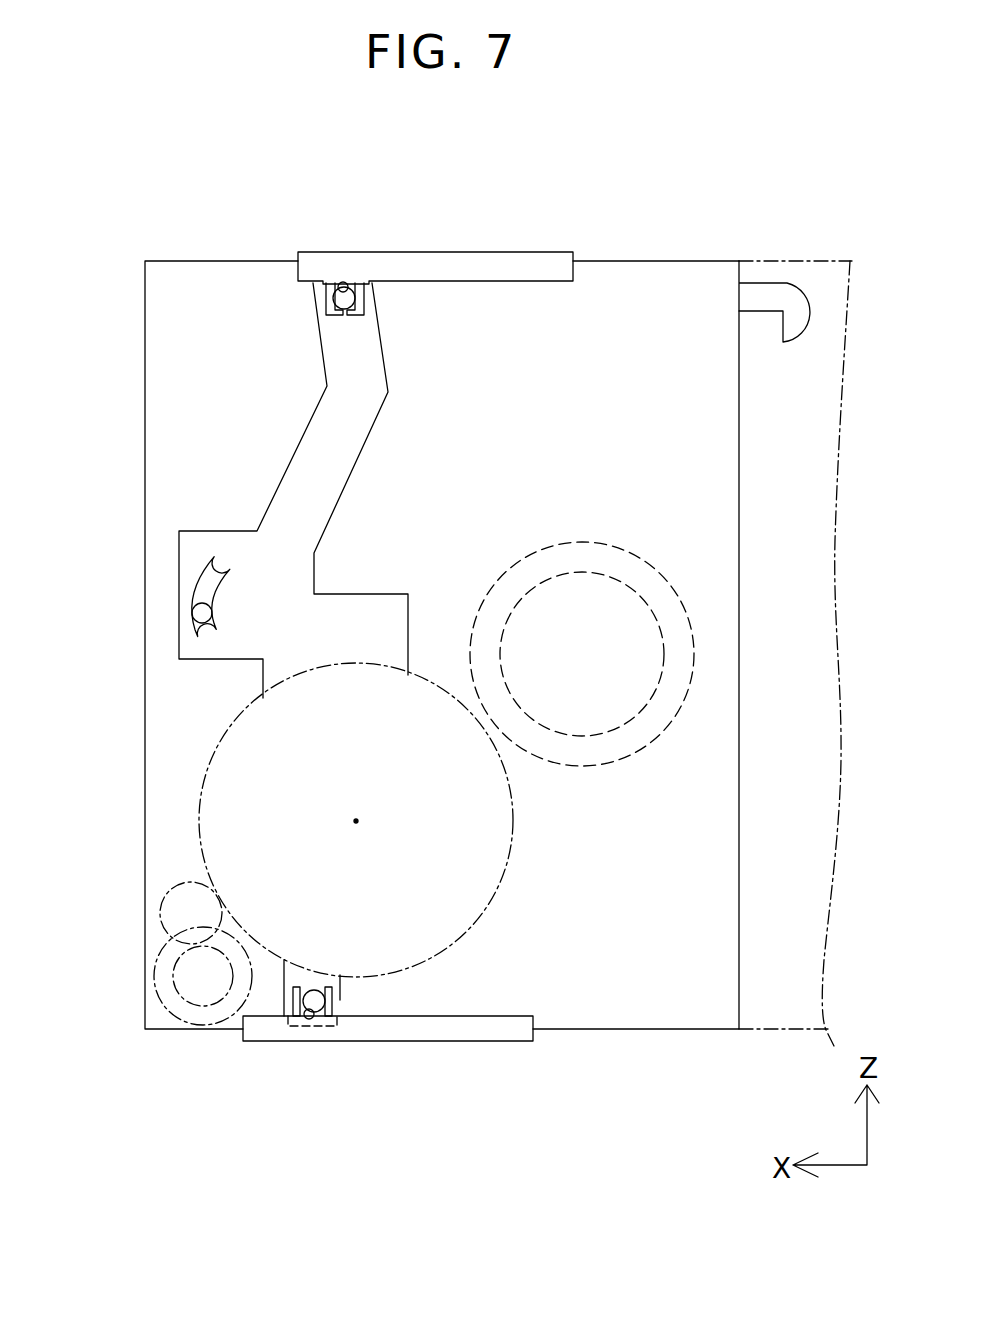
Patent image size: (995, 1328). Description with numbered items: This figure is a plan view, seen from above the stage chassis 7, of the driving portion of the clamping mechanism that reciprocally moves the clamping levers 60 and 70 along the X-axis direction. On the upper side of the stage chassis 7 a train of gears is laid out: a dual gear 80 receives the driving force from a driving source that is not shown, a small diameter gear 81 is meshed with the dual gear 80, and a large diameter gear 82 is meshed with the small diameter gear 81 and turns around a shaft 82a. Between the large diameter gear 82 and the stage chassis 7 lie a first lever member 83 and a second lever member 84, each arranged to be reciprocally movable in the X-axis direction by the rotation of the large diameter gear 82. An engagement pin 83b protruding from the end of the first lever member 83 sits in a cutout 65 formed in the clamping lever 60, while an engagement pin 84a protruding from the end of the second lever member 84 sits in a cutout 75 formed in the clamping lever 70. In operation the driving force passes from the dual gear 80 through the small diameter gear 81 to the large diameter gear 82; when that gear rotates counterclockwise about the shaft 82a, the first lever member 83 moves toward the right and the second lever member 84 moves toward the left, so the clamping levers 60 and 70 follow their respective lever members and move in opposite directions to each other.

The stage chassis 7 is at (705, 276).
The clamping lever 70 is at (486, 258).
The cutout 75 is at (340, 285).
The second lever member 84 is at (316, 445).
The engagement pin 84a is at (349, 284).
The large diameter gear 82 is at (213, 745).
The shaft 82a is at (356, 821).
The small diameter gear 81 is at (164, 906).
The dual gear 80 is at (156, 972).
The first lever member 83 is at (283, 980).
The engagement pin 83b is at (336, 993).
The cutout 65 is at (310, 1015).
The clamping lever 60 is at (323, 1041).